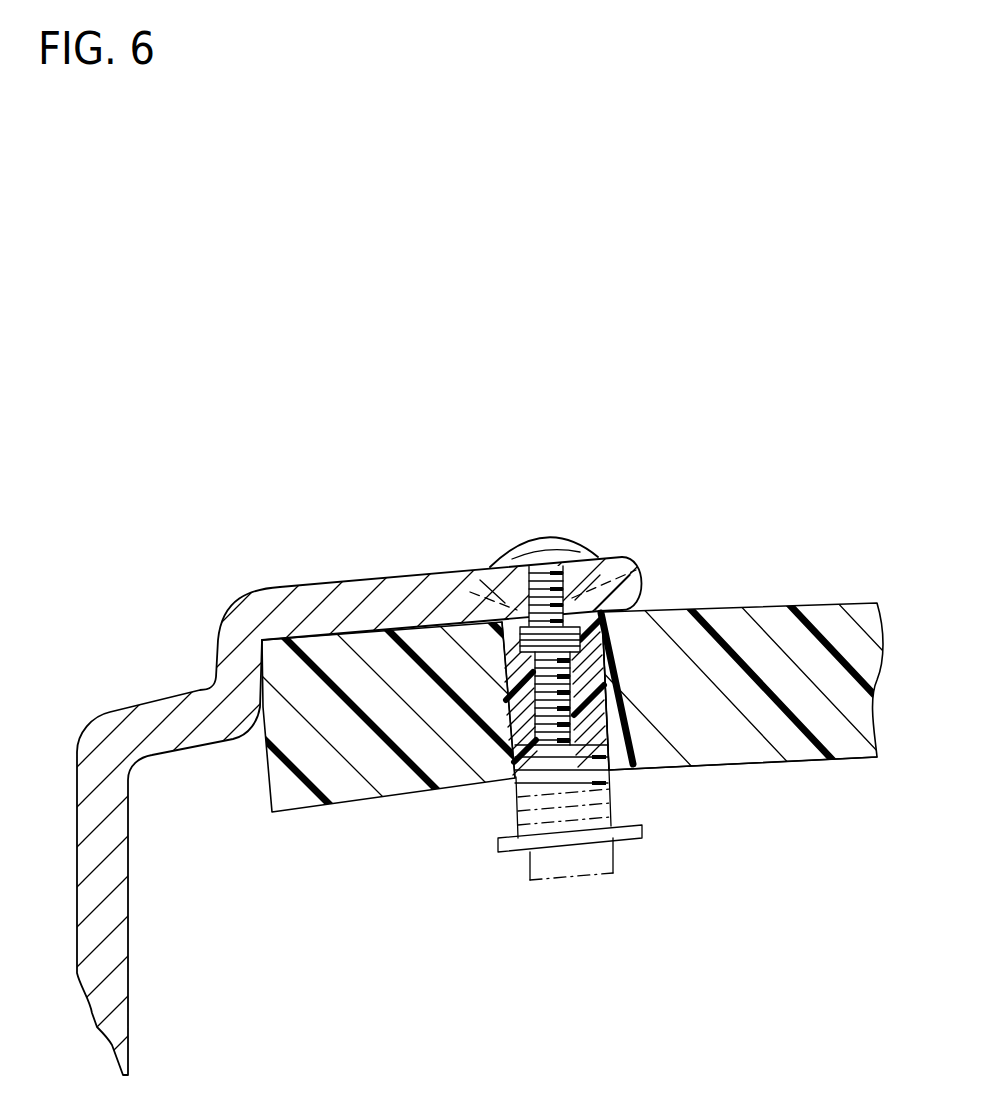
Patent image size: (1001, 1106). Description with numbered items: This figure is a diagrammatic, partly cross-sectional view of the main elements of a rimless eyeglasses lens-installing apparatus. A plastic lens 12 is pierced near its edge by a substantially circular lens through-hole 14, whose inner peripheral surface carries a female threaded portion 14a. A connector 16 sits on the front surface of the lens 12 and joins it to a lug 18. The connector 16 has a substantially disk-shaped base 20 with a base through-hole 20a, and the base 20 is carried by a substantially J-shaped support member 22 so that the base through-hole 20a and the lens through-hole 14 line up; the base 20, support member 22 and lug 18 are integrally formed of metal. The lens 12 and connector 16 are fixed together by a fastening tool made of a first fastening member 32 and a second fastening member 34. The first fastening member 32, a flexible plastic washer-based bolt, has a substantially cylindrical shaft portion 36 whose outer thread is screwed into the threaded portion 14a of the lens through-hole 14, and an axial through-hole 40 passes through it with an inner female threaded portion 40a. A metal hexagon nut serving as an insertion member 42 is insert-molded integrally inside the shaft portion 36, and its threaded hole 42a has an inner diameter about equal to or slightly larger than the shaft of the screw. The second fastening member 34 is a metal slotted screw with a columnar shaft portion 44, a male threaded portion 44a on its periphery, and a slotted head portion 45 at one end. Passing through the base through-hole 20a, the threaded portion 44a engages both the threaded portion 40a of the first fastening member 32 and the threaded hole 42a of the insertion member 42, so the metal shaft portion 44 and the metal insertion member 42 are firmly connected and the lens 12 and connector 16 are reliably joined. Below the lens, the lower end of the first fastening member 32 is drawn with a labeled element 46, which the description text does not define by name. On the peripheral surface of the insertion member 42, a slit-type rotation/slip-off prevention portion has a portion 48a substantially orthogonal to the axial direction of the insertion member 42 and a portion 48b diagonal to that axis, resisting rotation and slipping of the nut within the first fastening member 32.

The lens 12 is at (280, 786).
The lens through-hole 14 is at (614, 768).
The threaded portion 14a is at (612, 720).
The connector 16 is at (613, 563).
The lug 18 is at (117, 745).
The base 20 is at (639, 540).
The base through-hole 20a is at (470, 592).
The support member 22 is at (283, 615).
The first fastening member 32 is at (625, 855).
The second fastening member 34 is at (549, 528).
The shaft portion 36 is at (512, 725).
The through-hole 40 is at (625, 678).
The threaded portion 40a is at (352, 635).
The insertion member 42 is at (812, 750).
The threaded hole 42a is at (632, 587).
The shaft portion 44 is at (503, 590).
The threaded portion 44a is at (580, 560).
The head portion 45 is at (512, 550).
The nut 46 is at (540, 866).
The rotation/slip-off prevention portion 48a is at (607, 673).
The rotation/slip-off prevention portion 48b is at (502, 635).